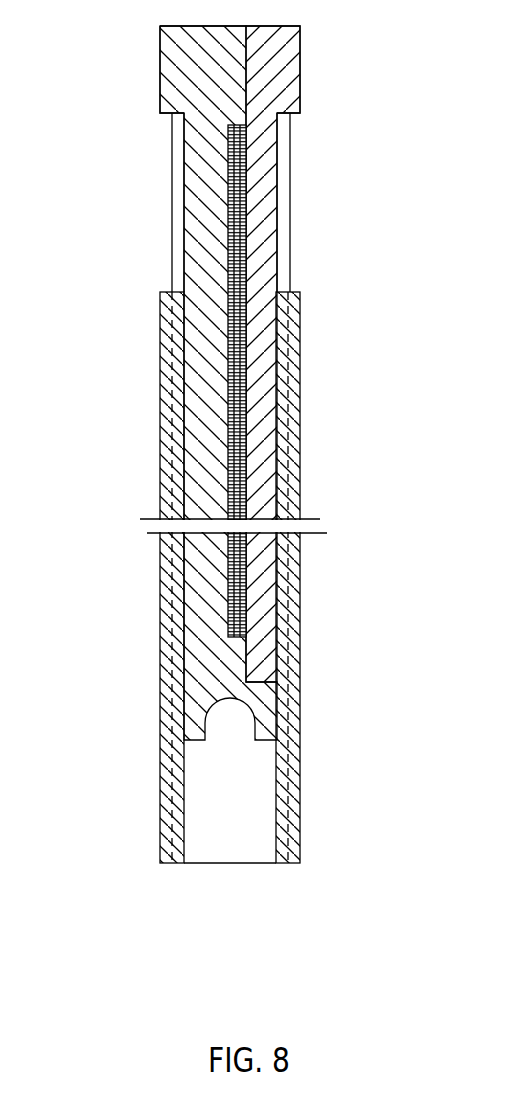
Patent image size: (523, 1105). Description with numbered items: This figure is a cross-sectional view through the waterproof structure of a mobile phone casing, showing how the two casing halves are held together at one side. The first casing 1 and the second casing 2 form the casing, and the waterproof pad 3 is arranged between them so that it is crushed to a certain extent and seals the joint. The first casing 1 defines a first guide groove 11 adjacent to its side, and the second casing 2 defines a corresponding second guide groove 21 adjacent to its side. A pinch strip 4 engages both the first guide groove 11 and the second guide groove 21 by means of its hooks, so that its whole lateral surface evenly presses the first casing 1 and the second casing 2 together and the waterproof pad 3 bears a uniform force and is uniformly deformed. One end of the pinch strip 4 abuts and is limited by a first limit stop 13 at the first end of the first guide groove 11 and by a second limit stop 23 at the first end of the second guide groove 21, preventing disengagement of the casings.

The first casing 1 is at (210, 230).
The second casing 2 is at (258, 242).
The waterproof pad 3 is at (226, 178).
The pinch strip 4 is at (290, 806).
The first guide groove 11 is at (173, 143).
The first limit stop 13 is at (160, 105).
The second guide groove 21 is at (286, 178).
The second limit stop 23 is at (300, 105).